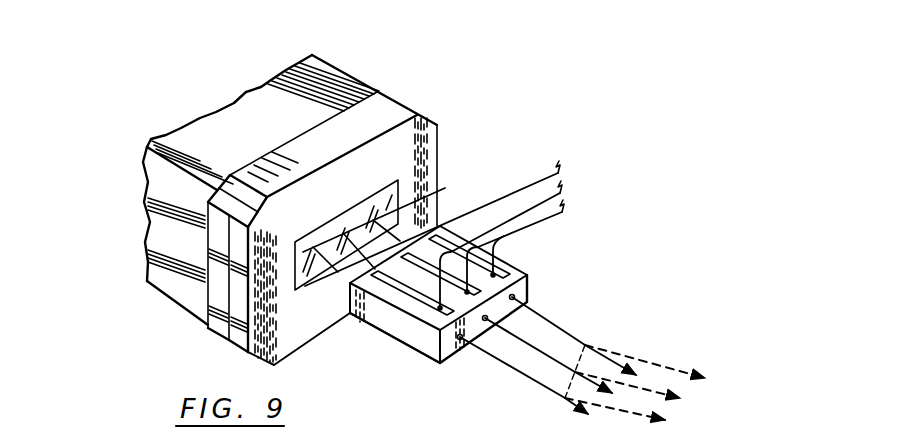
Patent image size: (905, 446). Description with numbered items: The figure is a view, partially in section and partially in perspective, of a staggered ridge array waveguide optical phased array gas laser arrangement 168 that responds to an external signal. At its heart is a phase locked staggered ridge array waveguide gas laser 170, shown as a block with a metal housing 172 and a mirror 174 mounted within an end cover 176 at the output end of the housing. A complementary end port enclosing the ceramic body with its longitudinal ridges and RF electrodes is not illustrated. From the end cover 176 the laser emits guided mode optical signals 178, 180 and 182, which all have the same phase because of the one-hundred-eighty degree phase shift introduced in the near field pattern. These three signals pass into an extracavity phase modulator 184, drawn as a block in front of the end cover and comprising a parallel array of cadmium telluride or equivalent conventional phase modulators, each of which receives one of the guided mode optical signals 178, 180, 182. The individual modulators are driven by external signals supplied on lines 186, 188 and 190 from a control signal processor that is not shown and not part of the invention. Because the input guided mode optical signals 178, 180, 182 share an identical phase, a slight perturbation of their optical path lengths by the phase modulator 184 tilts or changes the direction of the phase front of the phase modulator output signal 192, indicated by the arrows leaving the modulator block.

The staggered ridge array waveguide optical phased array gas laser arrangement 168 is at (154, 54).
The phase locked staggered ridge array waveguide gas laser 170 is at (345, 64).
The metal housing 172 is at (147, 189).
The mirror 174 is at (358, 197).
The end cover 176 is at (429, 131).
The guided mode optical signal 178 is at (312, 236).
The guided mode optical signal 180 is at (352, 231).
The guided mode optical signal 182 is at (432, 194).
The extracavity phase modulator 184 is at (430, 352).
The line 186 is at (532, 193).
The line 188 is at (530, 216).
The line 190 is at (516, 243).
The phase modulator output signal 192 is at (578, 368).